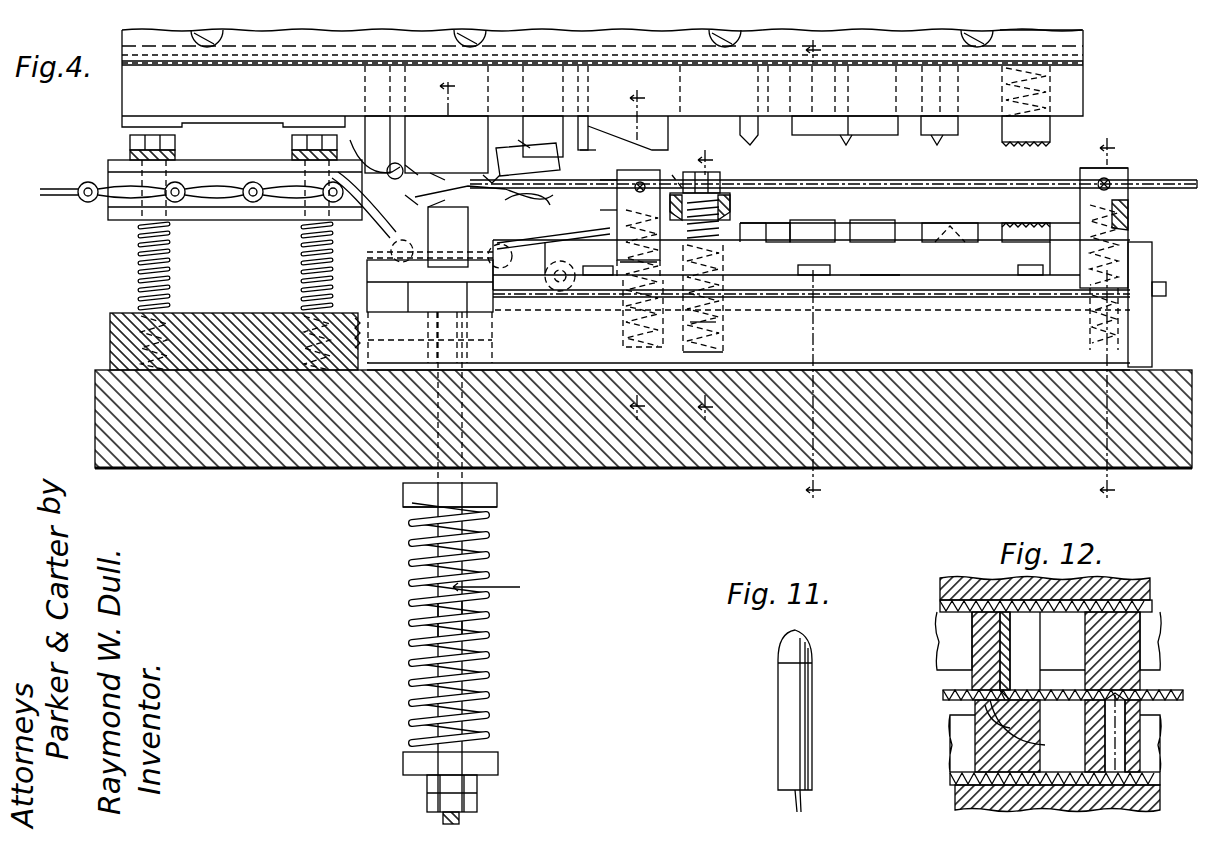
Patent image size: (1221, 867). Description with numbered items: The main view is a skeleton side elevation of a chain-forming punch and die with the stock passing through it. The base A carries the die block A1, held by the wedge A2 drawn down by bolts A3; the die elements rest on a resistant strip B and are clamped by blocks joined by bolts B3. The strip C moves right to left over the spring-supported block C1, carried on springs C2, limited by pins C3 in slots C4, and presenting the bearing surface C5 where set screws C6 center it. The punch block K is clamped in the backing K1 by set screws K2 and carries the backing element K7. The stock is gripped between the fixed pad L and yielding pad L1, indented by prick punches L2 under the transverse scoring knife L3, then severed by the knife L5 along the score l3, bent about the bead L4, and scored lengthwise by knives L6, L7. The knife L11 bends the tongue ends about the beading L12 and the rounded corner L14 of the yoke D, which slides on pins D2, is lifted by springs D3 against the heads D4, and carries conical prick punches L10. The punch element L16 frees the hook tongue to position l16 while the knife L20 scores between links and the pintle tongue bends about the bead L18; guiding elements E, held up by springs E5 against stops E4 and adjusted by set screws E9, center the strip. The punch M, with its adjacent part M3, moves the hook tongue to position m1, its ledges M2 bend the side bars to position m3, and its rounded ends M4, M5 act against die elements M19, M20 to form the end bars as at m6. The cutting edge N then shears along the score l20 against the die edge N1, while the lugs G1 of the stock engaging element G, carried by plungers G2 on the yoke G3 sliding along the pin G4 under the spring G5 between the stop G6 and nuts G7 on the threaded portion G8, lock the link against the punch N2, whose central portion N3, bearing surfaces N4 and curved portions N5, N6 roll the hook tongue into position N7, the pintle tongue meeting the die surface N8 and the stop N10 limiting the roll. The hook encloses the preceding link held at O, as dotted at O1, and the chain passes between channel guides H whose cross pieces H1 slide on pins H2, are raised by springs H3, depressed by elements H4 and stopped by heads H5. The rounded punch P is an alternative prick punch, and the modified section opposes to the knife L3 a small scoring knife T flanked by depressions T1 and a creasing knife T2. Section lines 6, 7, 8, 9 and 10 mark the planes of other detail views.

In FIG. 4, the base A is at (935, 462).
In FIG. 12, the base A is at (1158, 796).
In FIG. 4, the die block A1 is at (906, 240).
In FIG. 12, the die block A1 is at (1158, 740).
In FIG. 4, the wedge A2 is at (878, 280).
In FIG. 4, the bolts A3 is at (830, 270).
In FIG. 4, the strip of resistant material B is at (811, 295).
In FIG. 12, the strip of resistant material B is at (1160, 777).
In FIG. 4, the bolts B3 is at (550, 298).
In FIG. 4, the metal strip C is at (1168, 180).
In FIG. 12, the metal strip C is at (1172, 690).
In FIG. 4, the supporting block C1 is at (1114, 168).
In FIG. 4, the spiral springs C2 is at (1120, 322).
In FIG. 4, the pins C3 is at (1152, 254).
In FIG. 4, the slots C4 is at (1128, 222).
In FIG. 4, the flat bearing surface C5 is at (1128, 172).
In FIG. 4, the set screws C6 is at (1099, 180).
In FIG. 4, the stock supporting yoke D is at (712, 198).
In FIG. 4, the vertical pins D2 is at (723, 351).
In FIG. 4, the spiral springs D3 is at (723, 322).
In FIG. 4, the pin heads D4 is at (702, 172).
In FIG. 4, the stock guiding elements E is at (617, 176).
In FIG. 4, the stop E4 is at (620, 262).
In FIG. 4, the coiled springs E5 is at (623, 345).
In FIG. 4, the set screws E9 is at (639, 182).
In FIG. 4, the stock engaging element G is at (453, 278).
In FIG. 4, the longitudinal lugs G1 is at (448, 237).
In FIG. 4, the plungers G2 is at (433, 480).
In FIG. 4, the yoke G3 is at (497, 497).
In FIG. 4, the pin G4 is at (445, 618).
In FIG. 4, the spiral spring G5 is at (492, 662).
In FIG. 4, the stop G6 is at (493, 762).
In FIG. 4, the adjusting nuts G7 is at (477, 800).
In FIG. 4, the threaded lower portion of pin G8 is at (443, 818).
In FIG. 4, the channel iron guides H is at (120, 215).
In FIG. 4, the cross pieces H1 is at (130, 156).
In FIG. 4, the vertical guides H2 is at (140, 283).
In FIG. 4, the spiral springs H3 is at (170, 272).
In FIG. 4, the engaging elements H4 is at (283, 126).
In FIG. 4, the pin heads H5 is at (130, 140).
In FIG. 4, the punch block K is at (1066, 88).
In FIG. 12, the punch block K is at (1152, 625).
In FIG. 4, the working backing K1 is at (1068, 32).
In FIG. 12, the working backing K1 is at (1150, 590).
In FIG. 4, the set screws K2 is at (208, 47).
In FIG. 4, the backing element K7 is at (1060, 64).
In FIG. 12, the backing element K7 is at (1152, 606).
In FIG. 4, the gripping pad L is at (1030, 232).
In FIG. 4, the gripping pad L1 is at (1030, 140).
In FIG. 4, the prick punches L2 is at (1050, 97).
In FIG. 12, the prick punches L2 is at (1125, 707).
In FIG. 4, the transverse scoring knife L3 is at (938, 145).
In FIG. 12, the transverse scoring knife L3 is at (995, 688).
In FIG. 4, the bead L4 is at (856, 220).
In FIG. 4, the transverse severing knife L5 is at (848, 143).
In FIG. 4, the longitudinal scoring knife L6 is at (815, 222).
In FIG. 4, the longitudinal scoring knife L7 is at (806, 136).
In FIG. 4, the conical prick punch elements L10 is at (673, 168).
In FIG. 4, the knife L11 is at (749, 138).
In FIG. 4, the beading L12 is at (772, 224).
In FIG. 4, the rounded corner L14 is at (732, 210).
In FIG. 4, the punch element L16 is at (652, 136).
In FIG. 4, the transverse bead L18 is at (617, 210).
In FIG. 4, the transverse scoring knife L20 is at (610, 180).
In FIG. 4, the tooth l3 is at (841, 182).
In FIG. 4, the hook tongue position l16 is at (527, 209).
In FIG. 4, the score l20 is at (492, 178).
In FIG. 4, the punch element M is at (528, 159).
In FIG. 4, the inclined punch ledges M2 is at (522, 148).
In FIG. 4, the block M3 is at (543, 136).
In FIG. 4, the rounded end M4 is at (515, 148).
In FIG. 4, the rounded end M5 is at (588, 150).
In FIG. 4, the die element M19 is at (555, 292).
In FIG. 4, the die element M20 is at (590, 230).
In FIG. 4, the hook tongue position m1 is at (406, 207).
In FIG. 4, the side bar position m3 is at (445, 211).
In FIG. 4, the hook end bar form m6 is at (401, 177).
In FIG. 4, the cutting edge N is at (446, 144).
In FIG. 4, the die cutting edge N1 is at (496, 247).
In FIG. 4, the punch element N2 is at (436, 128).
In FIG. 4, the central portion N3 is at (484, 190).
In FIG. 4, the side bearing surfaces N4 is at (440, 173).
In FIG. 4, the curved portion N5 is at (418, 151).
In FIG. 4, the rolling die surface N6 is at (460, 172).
In FIG. 4, the hook tongue position N7 is at (86, 203).
In FIG. 4, the die surface N8 is at (486, 268).
In FIG. 4, the stop N10 is at (372, 165).
In FIG. 4, the pintle position O is at (364, 205).
In FIG. 4, the fastened link position O1 is at (392, 253).
In FIG. 11, the alternative prick punch P is at (786, 638).
In FIG. 12, the scoring knife T is at (1022, 736).
In FIG. 12, the depressions T1 is at (1010, 717).
In FIG. 12, the creasing knife T2 is at (1010, 703).
In FIG. 4, the section line 6 is at (1109, 323).
In FIG. 4, the section line 7 is at (814, 277).
In FIG. 4, the section line 8 is at (704, 293).
In FIG. 4, the section line 9 is at (637, 258).
In FIG. 4, the section line 10 is at (490, 332).